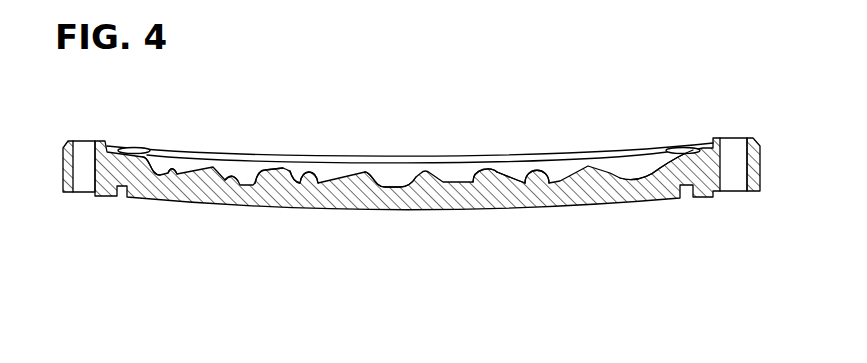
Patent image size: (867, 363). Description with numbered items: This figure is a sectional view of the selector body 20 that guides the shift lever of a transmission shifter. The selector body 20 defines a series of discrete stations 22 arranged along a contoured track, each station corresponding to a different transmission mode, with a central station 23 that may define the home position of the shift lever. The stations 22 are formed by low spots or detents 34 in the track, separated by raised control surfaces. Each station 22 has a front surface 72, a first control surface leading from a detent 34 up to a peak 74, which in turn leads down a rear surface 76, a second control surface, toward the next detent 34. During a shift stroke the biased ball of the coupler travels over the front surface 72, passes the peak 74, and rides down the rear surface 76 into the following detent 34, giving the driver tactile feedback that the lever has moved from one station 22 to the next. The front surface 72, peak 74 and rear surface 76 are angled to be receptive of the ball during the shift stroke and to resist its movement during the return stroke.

The selector body 20 is at (697, 162).
The stations 22 is at (236, 155).
The central station 23 is at (397, 187).
The detents 34 is at (198, 173).
The front surface 72 is at (305, 183).
The peak 74 is at (290, 170).
The rear surface 76 is at (257, 184).